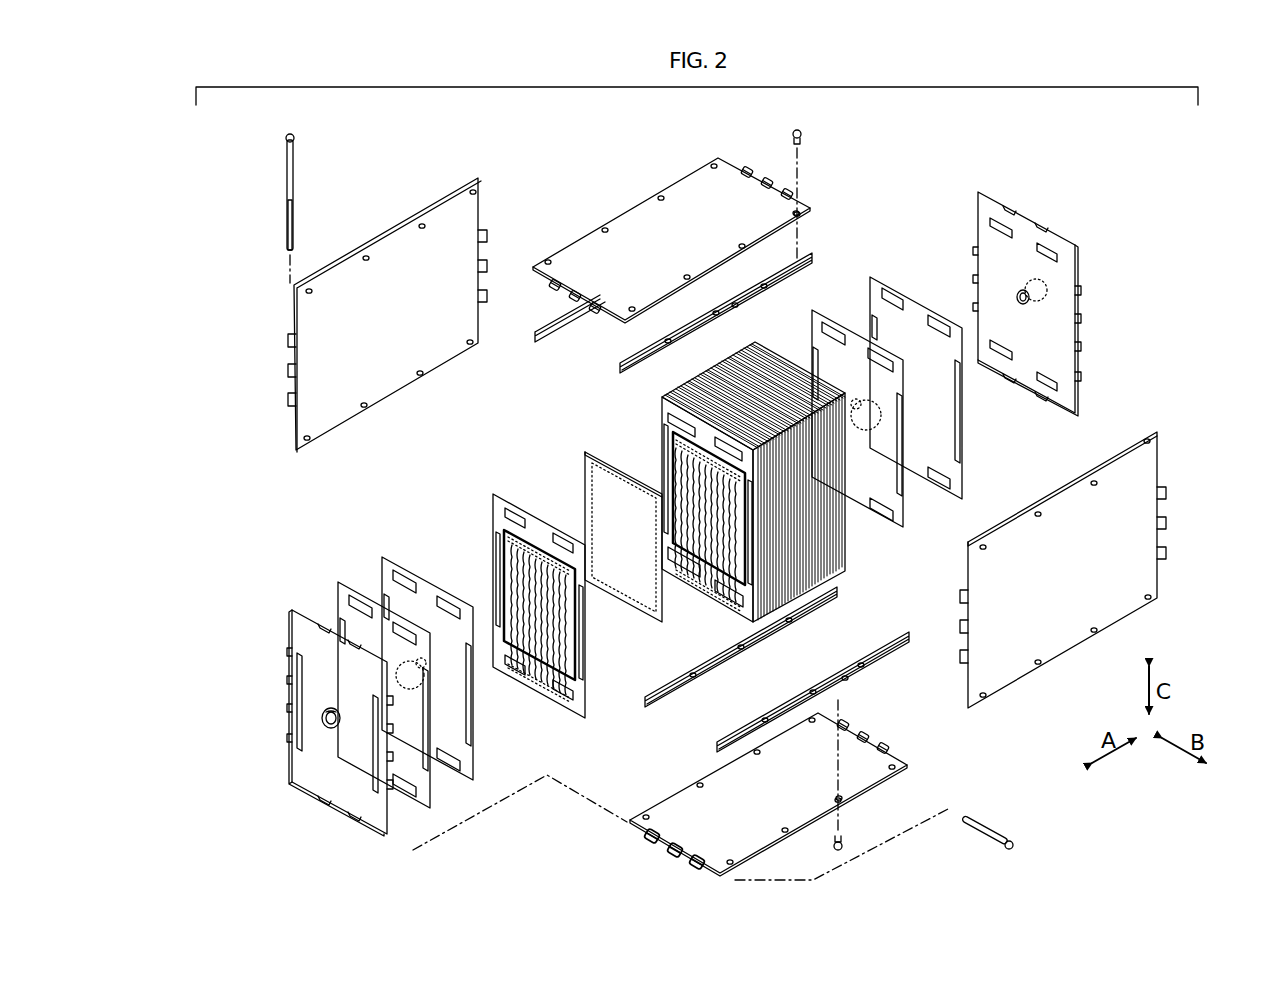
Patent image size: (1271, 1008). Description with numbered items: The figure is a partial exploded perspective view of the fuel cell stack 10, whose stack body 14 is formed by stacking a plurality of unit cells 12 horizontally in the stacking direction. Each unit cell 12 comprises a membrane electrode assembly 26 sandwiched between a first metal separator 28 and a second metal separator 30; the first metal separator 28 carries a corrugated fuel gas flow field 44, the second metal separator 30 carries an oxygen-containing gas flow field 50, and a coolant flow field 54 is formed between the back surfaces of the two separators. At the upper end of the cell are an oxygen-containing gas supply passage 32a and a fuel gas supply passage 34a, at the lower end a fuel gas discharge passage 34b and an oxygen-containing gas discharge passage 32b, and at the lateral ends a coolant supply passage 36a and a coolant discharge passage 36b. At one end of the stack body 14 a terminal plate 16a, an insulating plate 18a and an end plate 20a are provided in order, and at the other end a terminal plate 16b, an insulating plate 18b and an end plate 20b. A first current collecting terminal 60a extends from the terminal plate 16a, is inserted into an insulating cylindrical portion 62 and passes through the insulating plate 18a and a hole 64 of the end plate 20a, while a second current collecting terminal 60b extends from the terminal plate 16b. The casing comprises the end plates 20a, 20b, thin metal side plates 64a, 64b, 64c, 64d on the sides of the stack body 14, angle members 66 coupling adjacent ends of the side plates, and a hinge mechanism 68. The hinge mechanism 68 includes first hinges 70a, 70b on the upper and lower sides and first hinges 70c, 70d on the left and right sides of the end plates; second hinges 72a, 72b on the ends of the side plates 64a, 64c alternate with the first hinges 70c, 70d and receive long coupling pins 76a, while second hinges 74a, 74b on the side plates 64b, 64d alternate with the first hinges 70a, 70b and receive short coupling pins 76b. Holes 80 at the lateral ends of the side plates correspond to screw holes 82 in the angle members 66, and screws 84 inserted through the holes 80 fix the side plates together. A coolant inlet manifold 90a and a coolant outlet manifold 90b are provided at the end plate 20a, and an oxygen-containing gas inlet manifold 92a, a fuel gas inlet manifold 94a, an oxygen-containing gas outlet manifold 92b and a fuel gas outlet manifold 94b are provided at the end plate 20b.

The fuel cell stack 10 is at (1158, 161).
The unit cell 12 is at (843, 542).
The stack body 14 is at (805, 482).
The terminal plate 16a is at (378, 560).
The terminal plate 16b is at (816, 310).
The insulating plate 18a is at (335, 585).
The insulating plate 18b is at (905, 289).
The end plate 20a is at (288, 607).
The end plate 20b is at (975, 190).
The membrane electrode assembly 26 is at (583, 450).
The first metal separator 28 is at (660, 412).
The second metal separator 30 is at (490, 493).
The oxygen-containing gas supply passage 32a is at (512, 512).
The oxygen-containing gas discharge passage 32b is at (562, 700).
The fuel gas supply passage 34a is at (557, 540).
The fuel gas discharge passage 34b is at (520, 678).
The coolant supply passage 36a is at (495, 538).
The coolant discharge passage 36b is at (585, 630).
The fuel gas flow field 44 is at (690, 469).
The oxygen-containing gas flow field 50 is at (505, 590).
The coolant flow field 54 is at (518, 572).
The first current collecting terminal 60a is at (435, 654).
The second current collecting terminal 60b is at (855, 395).
The insulating cylindrical portion 62 is at (333, 712).
The hole 64 is at (333, 725).
The side plate 64a is at (1162, 436).
The side plate 64b is at (630, 221).
The side plate 64c is at (393, 221).
The side plate 64d is at (687, 795).
The angle member 66 is at (557, 332).
The hinge mechanism 68 is at (285, 188).
The first hinge 70a is at (350, 645).
The first hinge 70b is at (1016, 204).
The first hinge 70c is at (287, 705).
The first hinge 70d is at (974, 259).
The second hinge 72a is at (1162, 521).
The second hinge 72b is at (485, 263).
The second hinge 74a is at (744, 172).
The second hinge 74b is at (850, 734).
The long coupling pin 76a is at (295, 215).
The short coupling pin 76b is at (985, 825).
The hole 80 is at (799, 213).
The screw hole 82 is at (735, 305).
The screw 84 is at (802, 138).
The coolant inlet manifold 90a is at (305, 740).
The coolant outlet manifold 90b is at (375, 780).
The oxygen-containing gas inlet manifold 92a is at (990, 228).
The oxygen-containing gas outlet manifold 92b is at (1050, 372).
The fuel gas inlet manifold 94a is at (1056, 245).
The fuel gas outlet manifold 94b is at (995, 345).